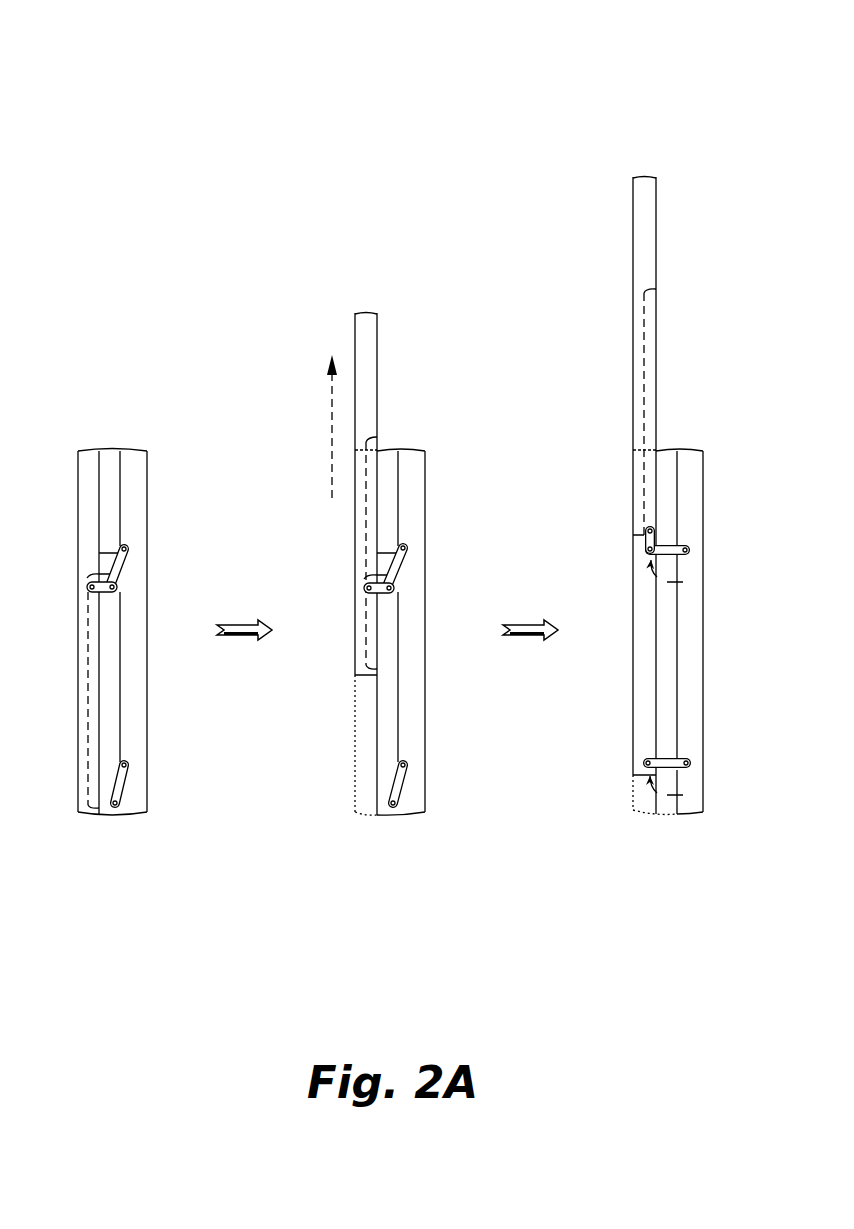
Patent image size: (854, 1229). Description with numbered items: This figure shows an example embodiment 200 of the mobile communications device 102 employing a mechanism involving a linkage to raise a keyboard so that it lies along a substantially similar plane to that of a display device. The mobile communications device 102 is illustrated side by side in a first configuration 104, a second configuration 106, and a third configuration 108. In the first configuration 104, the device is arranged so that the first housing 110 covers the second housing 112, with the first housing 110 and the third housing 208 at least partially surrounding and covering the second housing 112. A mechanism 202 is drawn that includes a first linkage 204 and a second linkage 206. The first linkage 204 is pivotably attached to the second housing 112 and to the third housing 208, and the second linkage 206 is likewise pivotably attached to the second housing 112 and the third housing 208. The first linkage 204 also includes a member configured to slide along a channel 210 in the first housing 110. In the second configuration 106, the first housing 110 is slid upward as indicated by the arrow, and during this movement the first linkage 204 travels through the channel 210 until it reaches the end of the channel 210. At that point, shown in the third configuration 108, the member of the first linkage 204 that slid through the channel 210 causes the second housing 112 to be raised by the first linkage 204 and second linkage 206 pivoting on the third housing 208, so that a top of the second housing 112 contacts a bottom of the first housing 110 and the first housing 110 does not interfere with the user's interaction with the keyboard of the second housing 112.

The example embodiment 200 is at (155, 75).
The first configuration 104 is at (81, 868).
The second configuration 106 is at (358, 868).
The third configuration 108 is at (643, 868).
The mobile communications device 102 is at (147, 451).
The first housing 110 is at (78, 451).
The second housing 112 is at (110, 815).
The mechanism 202 is at (158, 527).
The first linkage 204 is at (158, 596).
The second linkage 206 is at (158, 797).
The third housing 208 is at (142, 692).
The channel 210 is at (87, 690).